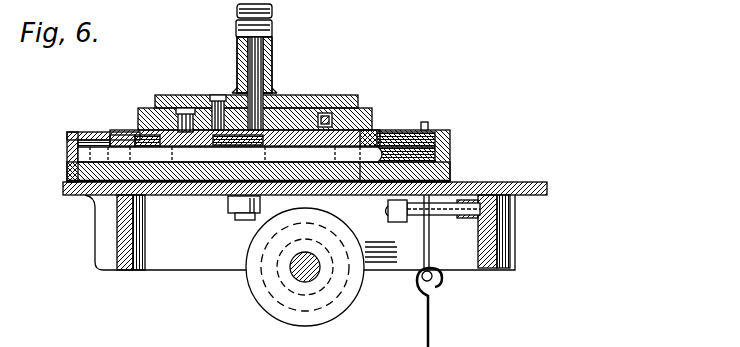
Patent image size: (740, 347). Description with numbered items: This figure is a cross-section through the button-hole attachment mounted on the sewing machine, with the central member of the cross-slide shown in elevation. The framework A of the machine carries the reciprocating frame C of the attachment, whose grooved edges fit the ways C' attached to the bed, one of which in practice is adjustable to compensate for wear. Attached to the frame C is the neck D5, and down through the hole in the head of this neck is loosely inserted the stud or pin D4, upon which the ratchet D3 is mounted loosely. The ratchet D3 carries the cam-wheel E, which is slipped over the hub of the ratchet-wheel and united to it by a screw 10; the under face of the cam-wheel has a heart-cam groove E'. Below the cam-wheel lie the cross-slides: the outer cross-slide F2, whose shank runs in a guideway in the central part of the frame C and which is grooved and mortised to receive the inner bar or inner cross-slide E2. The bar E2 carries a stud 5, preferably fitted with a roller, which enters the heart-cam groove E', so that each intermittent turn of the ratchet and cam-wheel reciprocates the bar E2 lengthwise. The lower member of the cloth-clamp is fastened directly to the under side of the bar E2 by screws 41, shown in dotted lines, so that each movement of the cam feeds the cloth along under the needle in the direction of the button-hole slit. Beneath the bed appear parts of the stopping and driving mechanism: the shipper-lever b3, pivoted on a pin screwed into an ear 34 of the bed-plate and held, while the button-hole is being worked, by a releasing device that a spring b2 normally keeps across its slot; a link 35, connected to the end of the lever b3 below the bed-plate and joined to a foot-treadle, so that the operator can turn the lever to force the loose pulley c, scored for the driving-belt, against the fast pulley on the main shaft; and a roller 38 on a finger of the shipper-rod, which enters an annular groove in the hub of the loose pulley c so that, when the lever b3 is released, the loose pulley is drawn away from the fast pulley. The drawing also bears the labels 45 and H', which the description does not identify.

The stud 5 is at (193, 97).
The screw 10 is at (217, 96).
The neck D5 is at (273, 52).
The stud or pin D4 is at (264, 92).
The ratchet D3 is at (333, 113).
The heart-cam groove E' is at (255, 101).
The cam-wheel E is at (147, 120).
The inner cross-slide bar E2 is at (62, 153).
The outer cross-slide F2 is at (376, 128).
The bearing block 45 is at (408, 130).
The shipper-lever b3 is at (433, 119).
The ways C' is at (246, 158).
The screws 41 is at (214, 151).
The reciprocating frame C is at (291, 216).
The loose pulley c is at (173, 196).
The framework A is at (305, 179).
The pulley wheel H' is at (305, 267).
The ear 34 is at (388, 204).
The spring b2 is at (437, 232).
The roller 38 is at (438, 243).
The link 35 is at (431, 332).